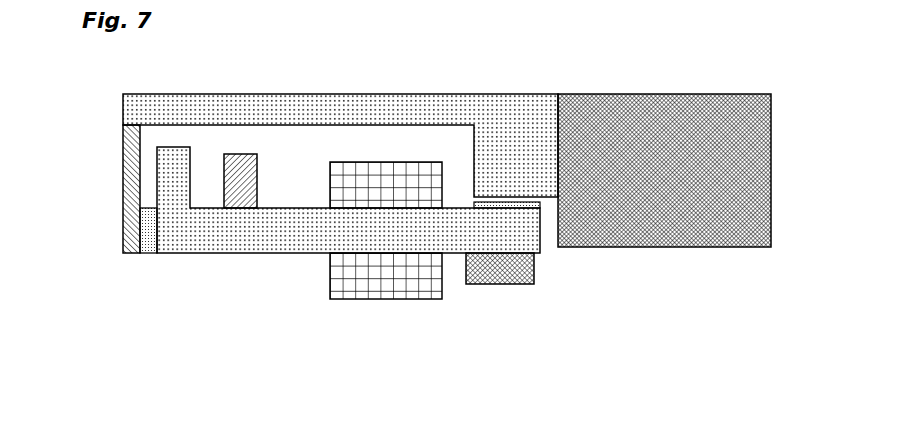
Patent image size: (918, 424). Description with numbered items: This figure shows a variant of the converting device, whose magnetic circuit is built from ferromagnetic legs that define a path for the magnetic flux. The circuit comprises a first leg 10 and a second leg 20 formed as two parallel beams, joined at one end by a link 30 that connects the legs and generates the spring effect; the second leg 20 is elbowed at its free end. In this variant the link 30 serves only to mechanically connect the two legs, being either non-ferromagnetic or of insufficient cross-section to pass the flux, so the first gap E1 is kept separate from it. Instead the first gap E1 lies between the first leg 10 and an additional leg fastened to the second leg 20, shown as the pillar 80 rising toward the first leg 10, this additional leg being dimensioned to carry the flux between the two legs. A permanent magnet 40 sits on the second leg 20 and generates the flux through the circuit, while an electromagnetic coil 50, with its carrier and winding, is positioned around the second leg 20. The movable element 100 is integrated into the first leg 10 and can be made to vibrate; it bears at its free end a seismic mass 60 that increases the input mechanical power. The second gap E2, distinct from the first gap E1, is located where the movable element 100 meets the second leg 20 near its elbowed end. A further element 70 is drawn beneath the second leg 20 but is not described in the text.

The first leg 10 is at (388, 108).
The second leg 20 is at (247, 245).
The link 30 is at (125, 175).
The permanent magnet 40 is at (243, 158).
The electromagnetic coil 50 is at (365, 291).
The seismic mass 60 is at (655, 108).
The contact block 70 is at (503, 278).
The pillar 80 is at (181, 150).
The movable element 100 is at (513, 92).
The first gap E1 is at (172, 137).
The second gap E2 is at (542, 203).